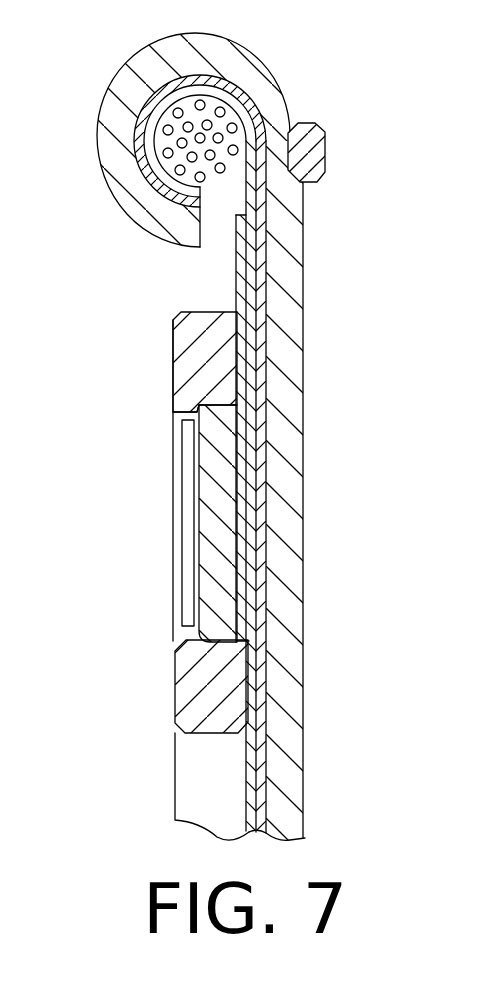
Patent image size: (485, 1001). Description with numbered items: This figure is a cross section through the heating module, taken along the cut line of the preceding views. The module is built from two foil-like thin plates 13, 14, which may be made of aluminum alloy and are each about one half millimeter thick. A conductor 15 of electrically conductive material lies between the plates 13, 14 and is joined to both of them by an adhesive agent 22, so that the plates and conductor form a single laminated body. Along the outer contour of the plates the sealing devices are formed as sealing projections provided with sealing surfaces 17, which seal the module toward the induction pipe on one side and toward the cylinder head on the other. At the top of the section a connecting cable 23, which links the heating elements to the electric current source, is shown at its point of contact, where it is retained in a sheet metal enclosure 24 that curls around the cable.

The foil-like thin plate 13 is at (207, 490).
The foil-like thin plate 14 is at (293, 700).
The conductor 15 is at (255, 372).
The sealing surface 17 is at (310, 147).
The adhesive agent 22 is at (265, 477).
The connecting cable 23 is at (222, 136).
The sheet metal enclosure 24 is at (180, 46).